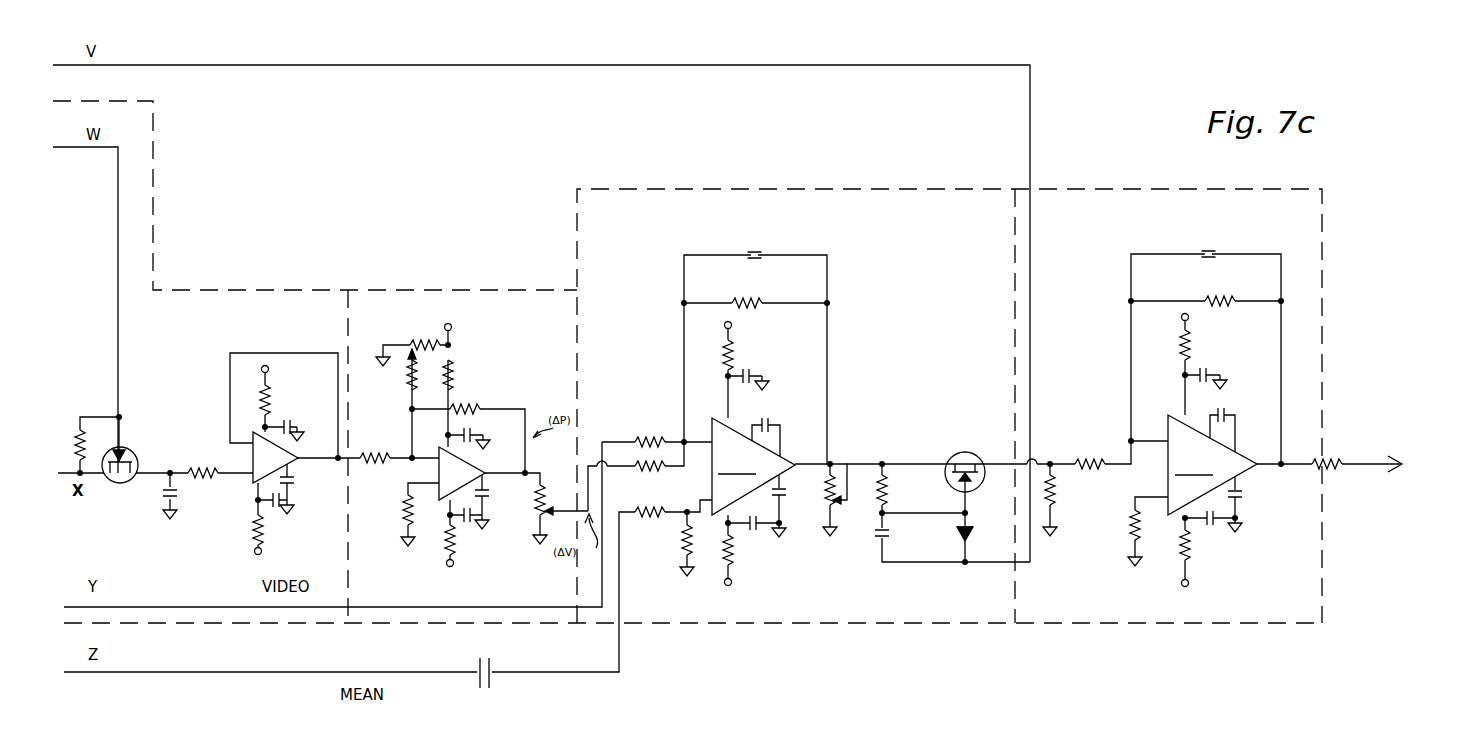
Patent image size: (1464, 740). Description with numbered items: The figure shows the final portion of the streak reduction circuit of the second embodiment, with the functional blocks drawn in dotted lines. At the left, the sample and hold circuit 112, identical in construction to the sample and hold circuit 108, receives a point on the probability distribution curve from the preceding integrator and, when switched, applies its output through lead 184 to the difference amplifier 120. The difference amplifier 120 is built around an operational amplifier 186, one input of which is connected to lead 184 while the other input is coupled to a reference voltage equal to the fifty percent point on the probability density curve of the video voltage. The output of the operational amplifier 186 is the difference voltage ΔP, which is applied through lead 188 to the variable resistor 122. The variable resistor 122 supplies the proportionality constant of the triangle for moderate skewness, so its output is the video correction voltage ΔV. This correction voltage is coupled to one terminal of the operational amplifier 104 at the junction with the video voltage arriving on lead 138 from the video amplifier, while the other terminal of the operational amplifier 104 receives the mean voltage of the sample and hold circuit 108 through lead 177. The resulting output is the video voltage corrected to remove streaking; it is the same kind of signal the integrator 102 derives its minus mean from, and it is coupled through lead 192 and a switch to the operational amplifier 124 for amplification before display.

The sample and hold circuit 112 is at (200, 346).
The sample and hold circuit 108 is at (273, 464).
The difference amplifier 120 is at (548, 339).
The lead 184 is at (358, 457).
The operational amplifier 186 is at (434, 483).
The lead 188 is at (525, 478).
The variable resistor 122 is at (548, 526).
The integrator 102 is at (572, 466).
The operational amplifier 104 is at (960, 284).
The lead 192 is at (1066, 458).
The operational amplifier 124 is at (1100, 284).
The lead 138 is at (225, 607).
The lead 177 is at (356, 672).